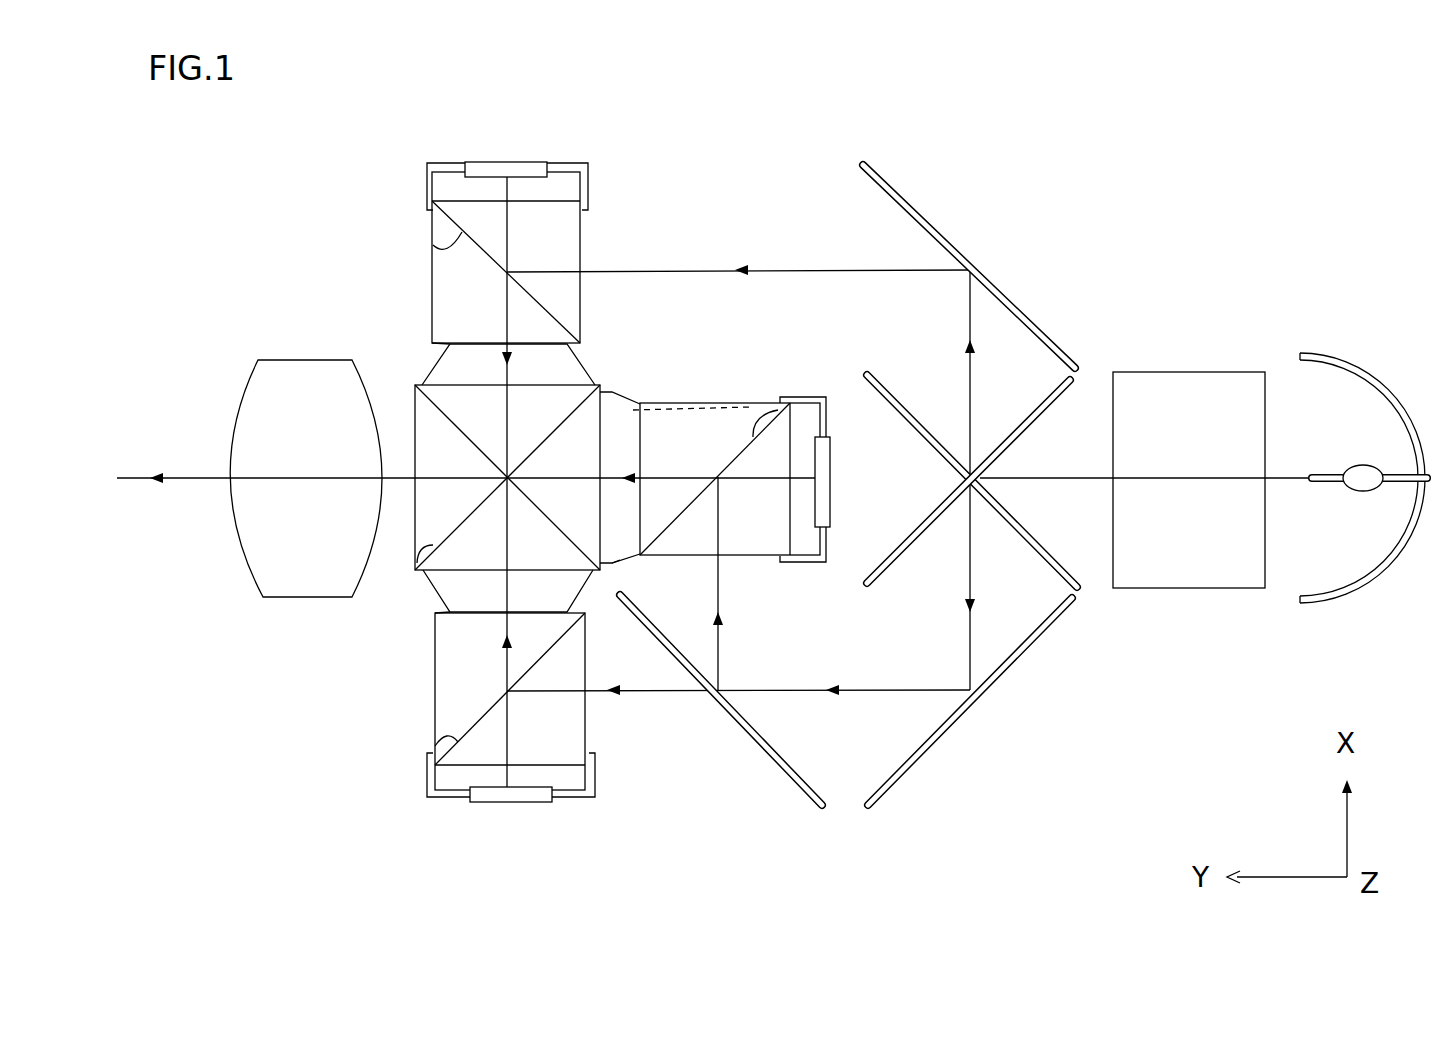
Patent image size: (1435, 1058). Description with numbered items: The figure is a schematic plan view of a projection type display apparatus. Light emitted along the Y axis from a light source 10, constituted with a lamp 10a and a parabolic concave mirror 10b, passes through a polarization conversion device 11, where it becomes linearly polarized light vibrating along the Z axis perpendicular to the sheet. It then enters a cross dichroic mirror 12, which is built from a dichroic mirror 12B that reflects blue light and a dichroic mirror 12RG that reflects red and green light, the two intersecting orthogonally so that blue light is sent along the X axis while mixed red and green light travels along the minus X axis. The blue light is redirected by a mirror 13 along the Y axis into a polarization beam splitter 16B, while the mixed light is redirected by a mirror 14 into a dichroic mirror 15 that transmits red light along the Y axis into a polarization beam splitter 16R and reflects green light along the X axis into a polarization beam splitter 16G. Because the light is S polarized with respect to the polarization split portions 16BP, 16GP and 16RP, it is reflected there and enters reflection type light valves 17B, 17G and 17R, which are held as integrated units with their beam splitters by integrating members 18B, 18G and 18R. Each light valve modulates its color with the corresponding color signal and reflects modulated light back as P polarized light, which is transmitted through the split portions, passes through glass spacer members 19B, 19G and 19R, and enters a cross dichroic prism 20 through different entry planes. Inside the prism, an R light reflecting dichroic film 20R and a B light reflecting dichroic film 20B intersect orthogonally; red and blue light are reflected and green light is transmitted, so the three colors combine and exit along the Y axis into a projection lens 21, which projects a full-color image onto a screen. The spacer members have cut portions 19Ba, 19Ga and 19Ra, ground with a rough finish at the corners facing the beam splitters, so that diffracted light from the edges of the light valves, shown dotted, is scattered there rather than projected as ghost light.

The light source 10 is at (1363, 495).
The lamp 10a is at (1323, 483).
The concave mirror 10b is at (1337, 367).
The polarization conversion device 11 is at (1205, 590).
The cross dichroic mirror 12 is at (1016, 488).
The dichroic mirror 12RG is at (1062, 398).
The dichroic mirror 12B is at (1070, 568).
The mirror 13 is at (883, 180).
The mirror 14 is at (933, 747).
The dichroic mirror 15 is at (795, 780).
The polarization beam splitter 16B is at (580, 240).
The polarization beam splitter 16R is at (435, 693).
The polarization beam splitter 16G is at (747, 547).
The polarization split portion 16BP is at (427, 243).
The polarization split portion 16RP is at (440, 733).
The polarization split portion 16GP is at (755, 435).
The reflection type light valve 17B is at (498, 162).
The reflection type light valve 17R is at (515, 802).
The reflection type light valve 17G is at (832, 478).
The integrating member 18B is at (587, 167).
The integrating member 18R is at (595, 775).
The integrating member 18G is at (823, 562).
The spacer member 19B is at (600, 382).
The cut portion 19Ba is at (433, 360).
The spacer member 19R is at (427, 580).
The cut portion 19Ra is at (433, 603).
The spacer member 19G is at (633, 410).
The cut portion 19Ga is at (622, 549).
The cross dichroic prism 20 is at (450, 458).
The R light reflecting dichroic film 20R is at (410, 402).
The B light reflecting dichroic film 20B is at (417, 563).
The projection lens 21 is at (258, 378).